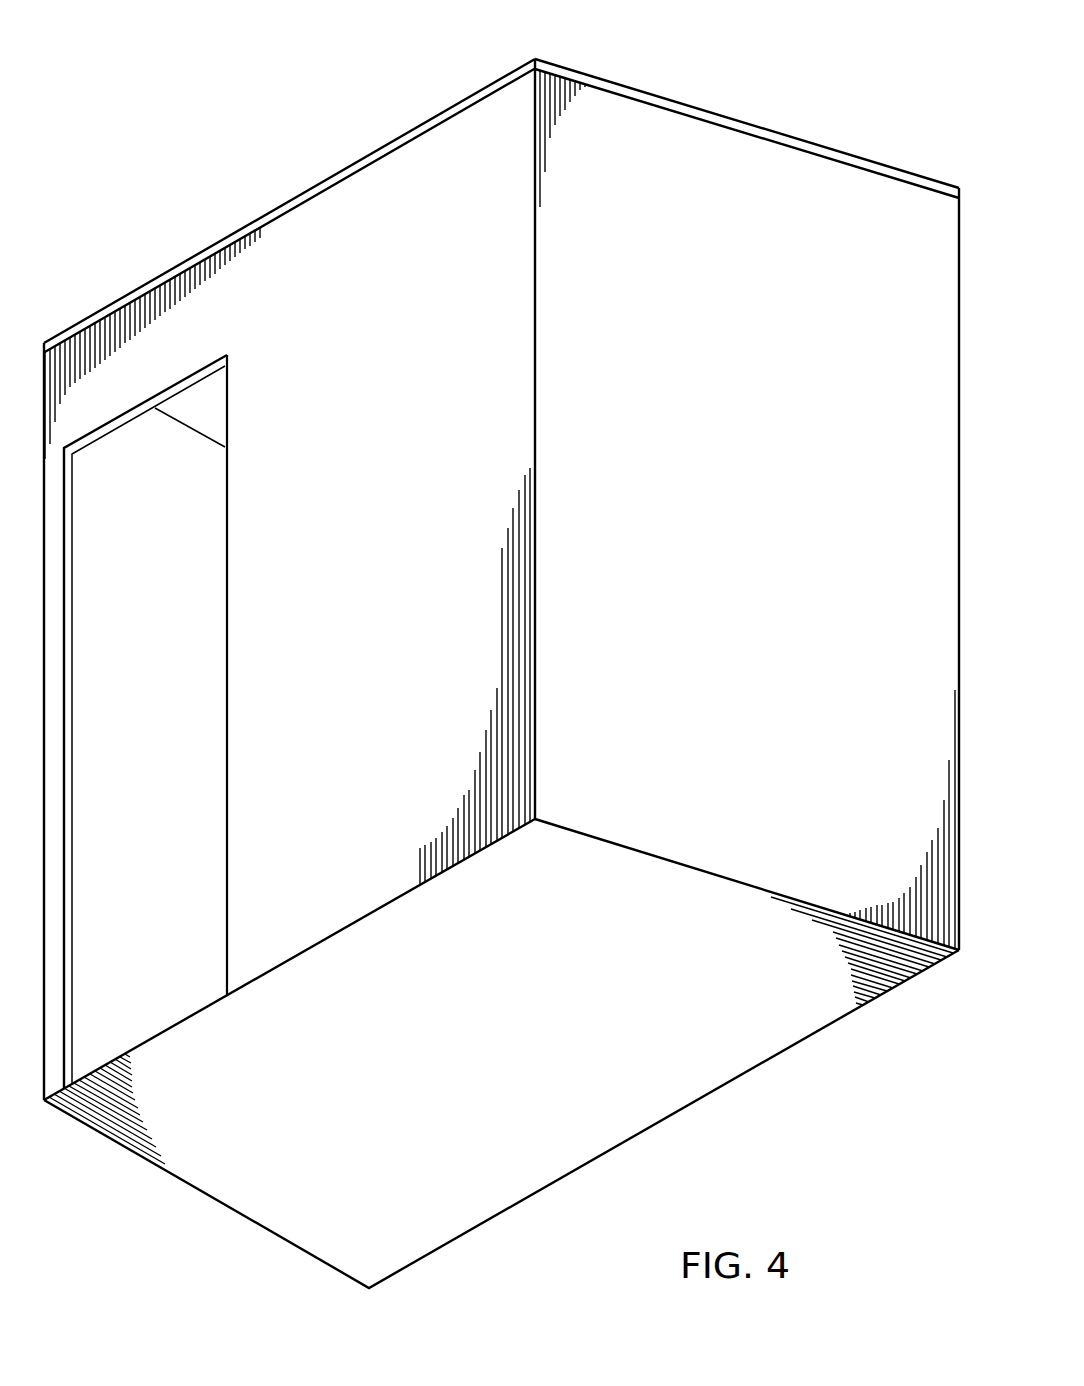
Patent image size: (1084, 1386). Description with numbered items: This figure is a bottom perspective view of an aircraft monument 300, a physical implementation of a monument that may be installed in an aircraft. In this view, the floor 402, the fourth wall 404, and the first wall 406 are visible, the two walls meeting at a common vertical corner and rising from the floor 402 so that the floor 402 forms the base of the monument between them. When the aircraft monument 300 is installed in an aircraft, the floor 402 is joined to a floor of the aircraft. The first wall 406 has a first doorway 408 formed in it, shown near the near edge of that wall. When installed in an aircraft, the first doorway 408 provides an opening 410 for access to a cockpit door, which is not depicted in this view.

The aircraft monument 300 is at (501, 660).
The floor 402 is at (266, 1206).
The fourth wall 404 is at (688, 148).
The first wall 406 is at (383, 187).
The first doorway 408 is at (237, 677).
The opening 410 is at (203, 564).